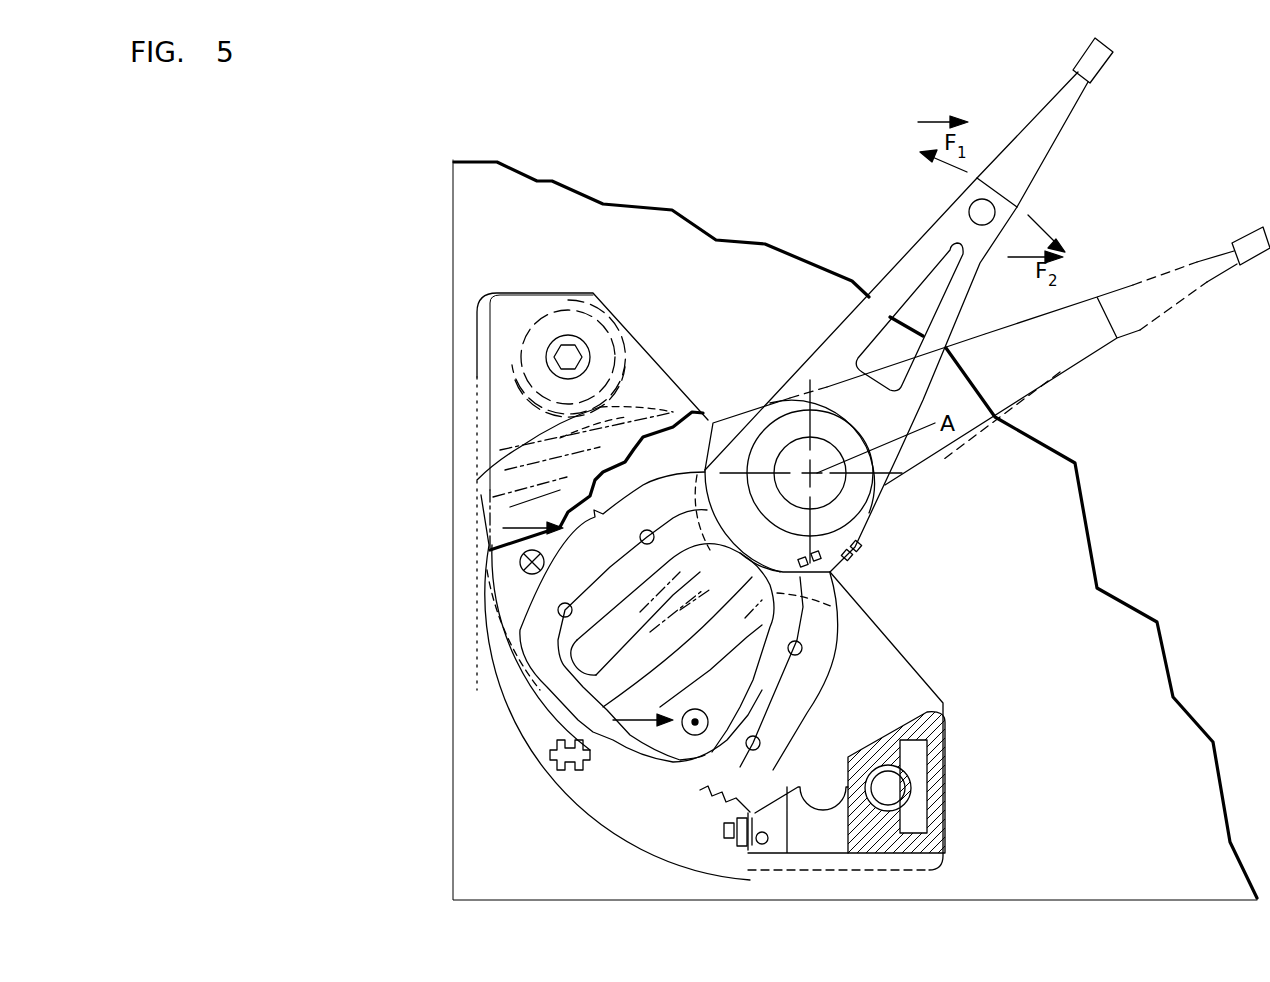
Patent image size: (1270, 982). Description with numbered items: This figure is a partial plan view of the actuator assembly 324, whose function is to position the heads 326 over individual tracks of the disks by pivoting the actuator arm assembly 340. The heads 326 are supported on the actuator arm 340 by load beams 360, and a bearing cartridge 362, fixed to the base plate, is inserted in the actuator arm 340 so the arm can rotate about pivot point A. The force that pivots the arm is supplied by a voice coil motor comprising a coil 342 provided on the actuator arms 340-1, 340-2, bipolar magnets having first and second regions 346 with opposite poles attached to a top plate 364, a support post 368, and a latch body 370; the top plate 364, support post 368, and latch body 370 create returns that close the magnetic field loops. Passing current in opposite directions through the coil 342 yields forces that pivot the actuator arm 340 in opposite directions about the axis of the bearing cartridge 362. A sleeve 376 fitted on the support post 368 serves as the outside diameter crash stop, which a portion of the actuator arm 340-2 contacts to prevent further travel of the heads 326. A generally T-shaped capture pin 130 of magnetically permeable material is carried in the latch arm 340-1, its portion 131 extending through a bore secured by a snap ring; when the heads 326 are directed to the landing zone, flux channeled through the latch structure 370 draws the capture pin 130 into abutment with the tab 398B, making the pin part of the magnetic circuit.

The actuator assembly 324 is at (893, 617).
The heads 326 is at (1088, 62).
The actuator arm assembly 340 is at (840, 363).
The actuator latch arm 340-1 is at (812, 668).
The actuator arm 340-2 is at (580, 567).
The coil 342 is at (632, 755).
The magnet regions 346 is at (568, 484).
The load beams 360 is at (1035, 148).
The bearing cartridge 362 is at (832, 490).
The top plate 364 is at (640, 378).
The support post 368 is at (600, 322).
The sleeve 376 is at (622, 342).
The latch body 370 is at (938, 772).
The capture pin 130 is at (730, 835).
The portion of capture pin 131 is at (717, 827).
The tab 398B is at (767, 843).